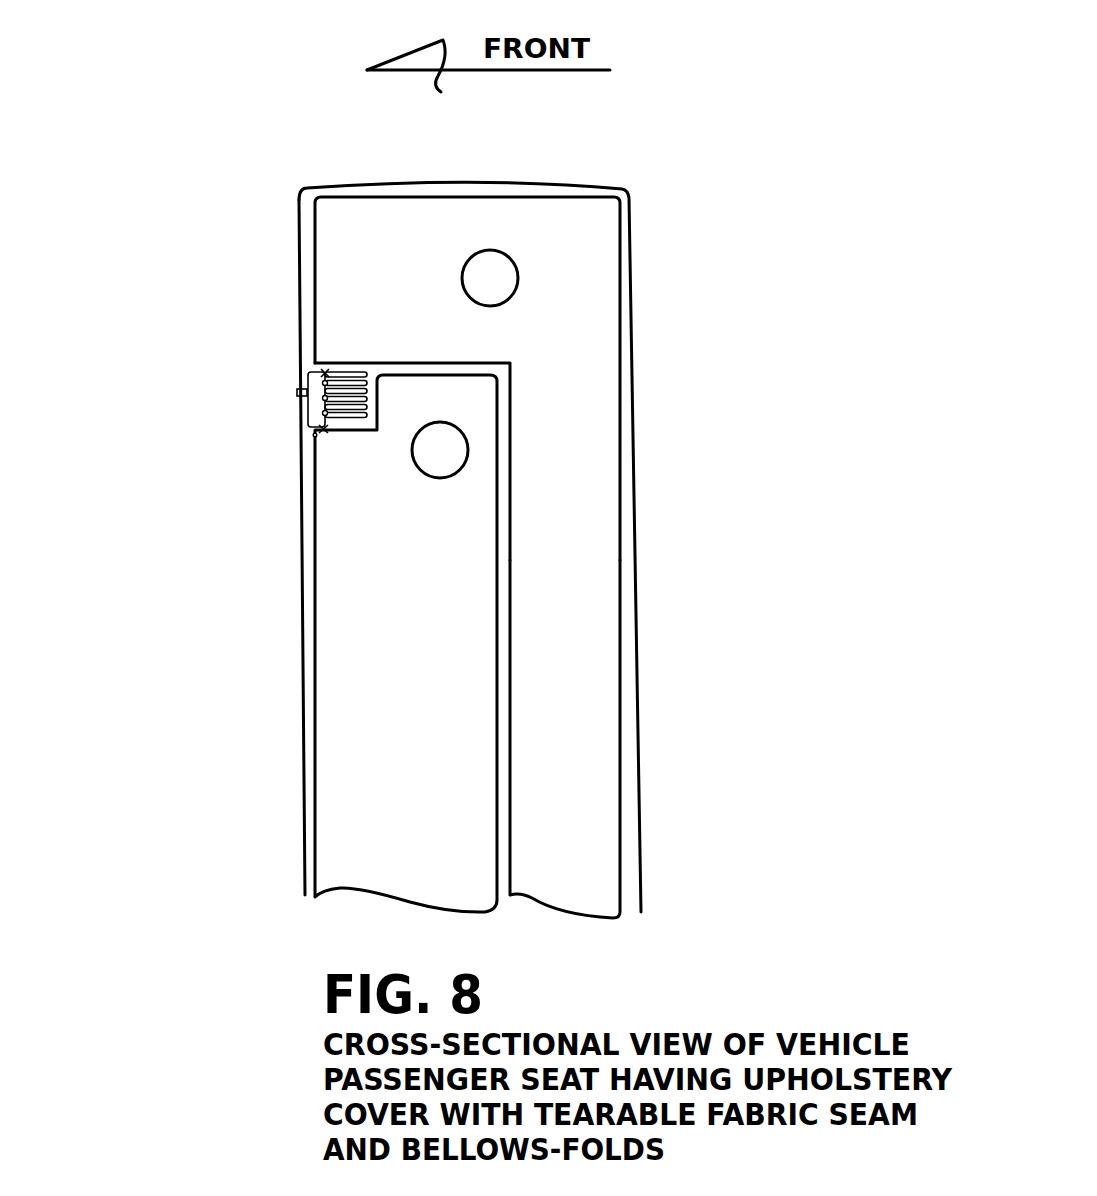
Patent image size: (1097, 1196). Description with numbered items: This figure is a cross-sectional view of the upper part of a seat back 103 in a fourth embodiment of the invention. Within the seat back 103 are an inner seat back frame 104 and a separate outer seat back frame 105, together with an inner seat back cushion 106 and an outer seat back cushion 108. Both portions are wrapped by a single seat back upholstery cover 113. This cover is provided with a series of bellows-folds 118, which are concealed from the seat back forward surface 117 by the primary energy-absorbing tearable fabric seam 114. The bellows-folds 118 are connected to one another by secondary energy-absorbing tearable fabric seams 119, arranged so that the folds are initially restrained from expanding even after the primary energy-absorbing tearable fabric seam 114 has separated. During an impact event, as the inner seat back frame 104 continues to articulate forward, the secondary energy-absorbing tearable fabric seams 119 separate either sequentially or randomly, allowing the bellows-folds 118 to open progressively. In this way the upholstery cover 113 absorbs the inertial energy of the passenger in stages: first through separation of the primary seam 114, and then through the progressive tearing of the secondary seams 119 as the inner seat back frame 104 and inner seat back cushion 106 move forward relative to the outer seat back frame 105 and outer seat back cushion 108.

The seat back 103 is at (592, 662).
The inner seat back frame 104 is at (418, 470).
The outer seat back frame 105 is at (516, 285).
The inner seat back cushion 106 is at (403, 695).
The outer seat back cushion 108 is at (550, 781).
The seat back upholstery cover 113 is at (490, 180).
The energy-absorbing tearable fabric seam 114 is at (295, 393).
The seat back forward surface 117 is at (300, 647).
The bellows-folds 118 is at (351, 361).
The secondary energy-absorbing tearable fabric seams 119 is at (320, 432).